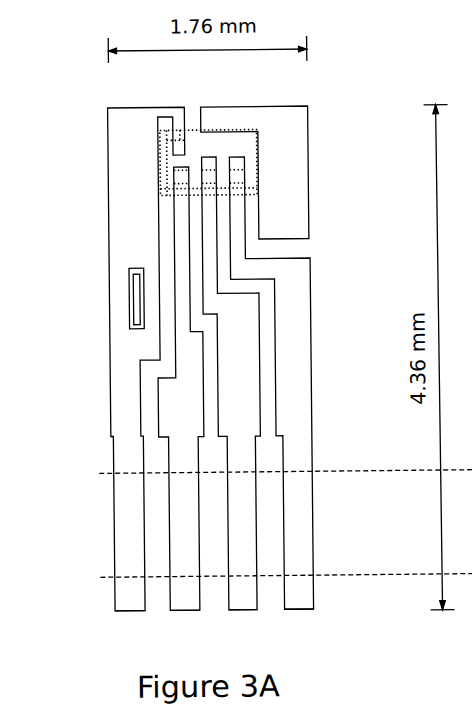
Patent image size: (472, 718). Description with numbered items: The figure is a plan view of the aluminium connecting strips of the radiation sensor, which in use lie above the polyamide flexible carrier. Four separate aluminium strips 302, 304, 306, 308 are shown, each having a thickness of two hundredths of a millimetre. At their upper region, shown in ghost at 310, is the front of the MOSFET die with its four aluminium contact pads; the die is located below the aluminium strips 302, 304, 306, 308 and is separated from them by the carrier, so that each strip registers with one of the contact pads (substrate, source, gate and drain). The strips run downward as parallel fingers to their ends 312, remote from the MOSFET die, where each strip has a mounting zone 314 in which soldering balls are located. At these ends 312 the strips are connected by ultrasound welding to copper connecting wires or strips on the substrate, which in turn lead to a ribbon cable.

The aluminium strip 302 is at (110, 351).
The aluminium strip 304 is at (158, 392).
The aluminium strip 306 is at (260, 386).
The aluminium strip 308 is at (310, 321).
The front of MOSFET die 310 is at (235, 127).
The ends of the aluminium strips 312 is at (157, 630).
The mounting zone 314 is at (98, 523).